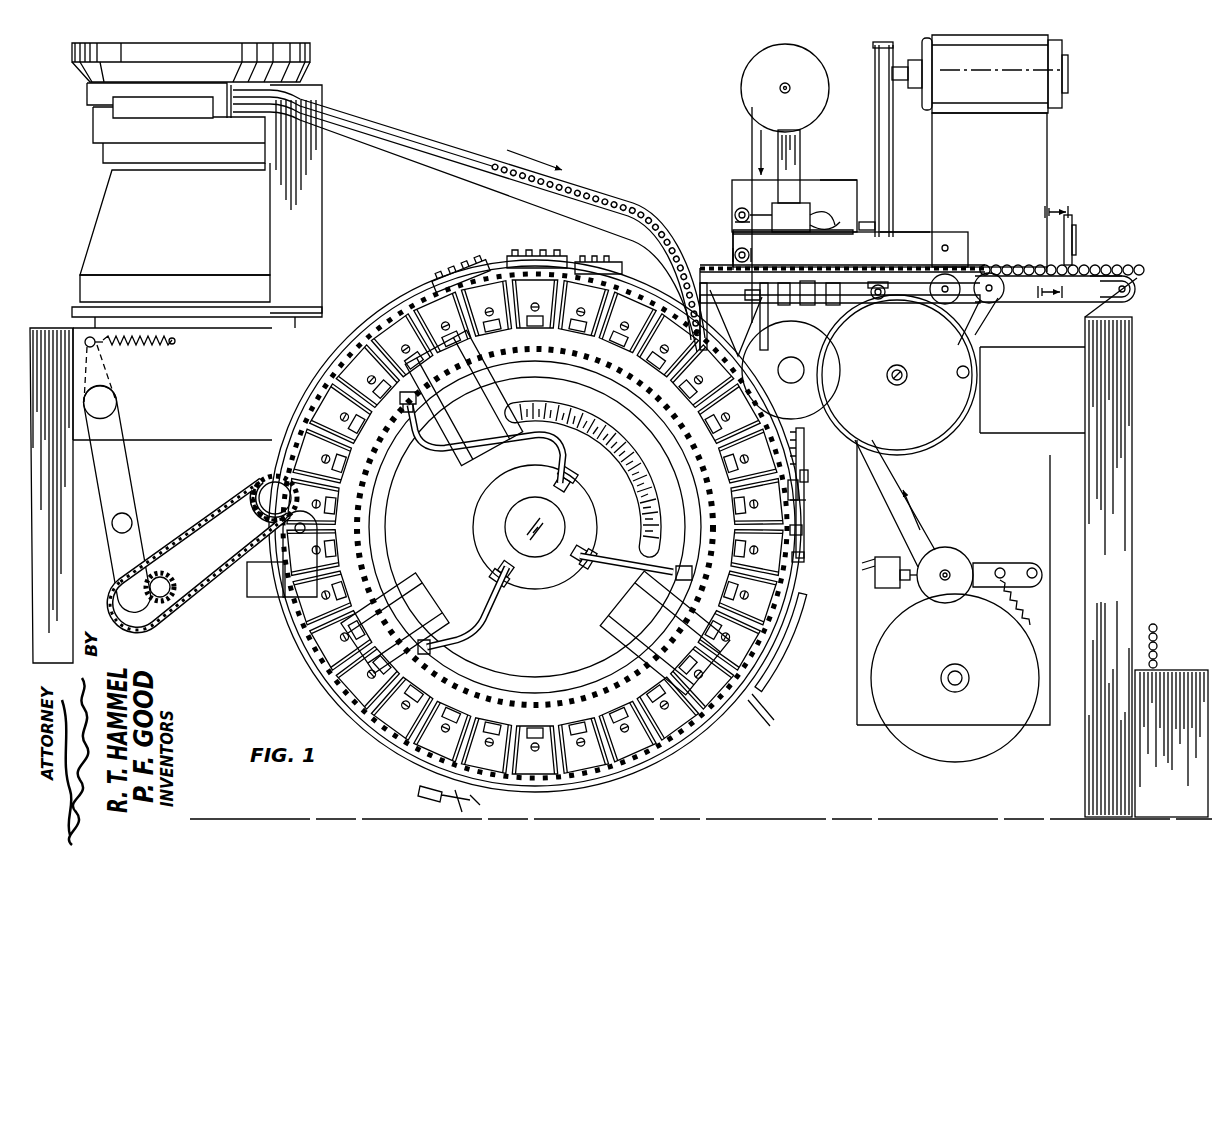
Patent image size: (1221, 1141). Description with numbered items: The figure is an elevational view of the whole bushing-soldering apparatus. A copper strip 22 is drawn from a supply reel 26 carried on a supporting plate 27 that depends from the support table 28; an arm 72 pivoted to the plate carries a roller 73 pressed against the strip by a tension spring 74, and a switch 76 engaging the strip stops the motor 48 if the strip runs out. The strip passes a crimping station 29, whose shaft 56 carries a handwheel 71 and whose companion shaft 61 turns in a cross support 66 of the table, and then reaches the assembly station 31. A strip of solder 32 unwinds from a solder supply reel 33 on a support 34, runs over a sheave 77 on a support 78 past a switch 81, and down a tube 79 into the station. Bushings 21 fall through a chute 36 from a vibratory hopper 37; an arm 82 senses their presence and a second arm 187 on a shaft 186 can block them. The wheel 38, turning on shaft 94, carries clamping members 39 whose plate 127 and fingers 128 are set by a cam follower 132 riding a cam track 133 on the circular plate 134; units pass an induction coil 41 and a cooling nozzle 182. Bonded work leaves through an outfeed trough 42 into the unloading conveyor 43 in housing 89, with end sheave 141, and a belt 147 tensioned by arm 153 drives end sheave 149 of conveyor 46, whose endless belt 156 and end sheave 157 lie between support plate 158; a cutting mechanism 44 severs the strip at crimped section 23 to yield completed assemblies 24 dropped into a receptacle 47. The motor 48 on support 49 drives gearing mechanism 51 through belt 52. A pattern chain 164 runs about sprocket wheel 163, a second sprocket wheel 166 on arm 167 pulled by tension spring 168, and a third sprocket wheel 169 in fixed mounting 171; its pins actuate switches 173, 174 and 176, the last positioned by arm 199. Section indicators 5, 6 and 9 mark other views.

The vibratory hopper 37 is at (318, 70).
The chute 36 is at (468, 152).
The bushings 21 is at (630, 228).
The wheel 38 is at (494, 695).
The assembly station 31 is at (690, 445).
The shaft 94 is at (525, 502).
The arm 199 is at (458, 478).
The switch 176 is at (480, 393).
The switch 174 is at (408, 585).
The switch 173 is at (622, 664).
The induction coil 41 is at (762, 668).
The nozzle 182 is at (430, 795).
The section line 9 is at (390, 247).
The section line 5 is at (535, 232).
The section line 6 is at (535, 712).
The cross support 66 is at (243, 442).
The arm 167 is at (128, 475).
The tension spring 168 is at (172, 346).
The chain 164 is at (198, 610).
The second sprocket wheel 166 is at (152, 590).
The third sprocket wheel 169 is at (242, 538).
The fixed mounting 171 is at (248, 592).
The sprocket wheel 163 is at (281, 498).
The solder supply reel 33 is at (742, 90).
The support 34 is at (798, 150).
The strip of solder 32 is at (750, 160).
The gearing mechanism 51 is at (838, 178).
The belt 52 is at (876, 155).
The motor 48 is at (1065, 62).
The support 49 is at (1048, 158).
The switch 81 is at (804, 205).
The sheave 77 is at (735, 213).
The support 78 is at (733, 233).
The outfeed trough 42 is at (722, 265).
The tube 79 is at (756, 252).
The unloading conveyor 43 is at (908, 230).
The housing 89 is at (946, 238).
The cutting mechanism 44 is at (1075, 235).
The crimped section 23 is at (1070, 262).
The completed assemblies 24 is at (1142, 265).
The shaft 186 is at (830, 292).
The arm 153 is at (880, 300).
The end sheave 141 is at (940, 303).
The end sheave 149 is at (998, 300).
The belt 147 is at (988, 338).
The conveyor 46 is at (1135, 305).
The endless belt 156 is at (1135, 283).
The end sheave 157 is at (1135, 293).
The support plate 158 is at (1100, 305).
The support table 28 is at (1135, 365).
The shaft 61 is at (797, 360).
The arm 82 is at (757, 340).
The second arm 187 is at (712, 340).
The handwheel 71 is at (900, 458).
The shaft 56 is at (897, 385).
The fingers 128 is at (799, 450).
The plate 127 is at (808, 476).
The clamping members 39 is at (800, 484).
The circular plate 134 is at (804, 501).
The cam track 133 is at (802, 531).
The cam follower 132 is at (804, 558).
The crimping station 29 is at (838, 452).
The supporting plate 27 is at (1050, 612).
The copper strip 22 is at (892, 500).
The roller 73 is at (948, 548).
The arm 72 is at (977, 562).
The tension spring 74 is at (1013, 600).
The switch 76 is at (888, 590).
The supply reel 26 is at (1012, 735).
The receptacle 47 is at (1172, 668).